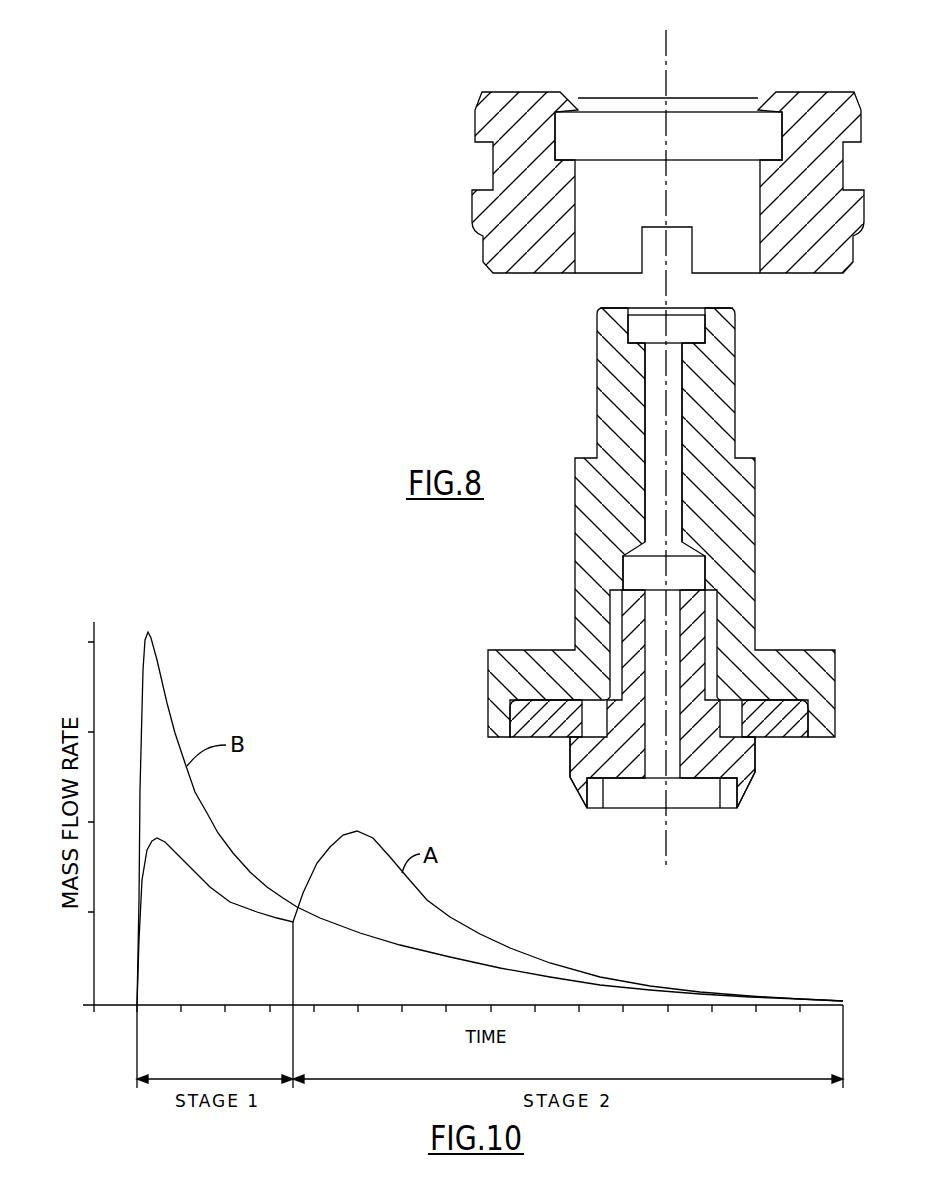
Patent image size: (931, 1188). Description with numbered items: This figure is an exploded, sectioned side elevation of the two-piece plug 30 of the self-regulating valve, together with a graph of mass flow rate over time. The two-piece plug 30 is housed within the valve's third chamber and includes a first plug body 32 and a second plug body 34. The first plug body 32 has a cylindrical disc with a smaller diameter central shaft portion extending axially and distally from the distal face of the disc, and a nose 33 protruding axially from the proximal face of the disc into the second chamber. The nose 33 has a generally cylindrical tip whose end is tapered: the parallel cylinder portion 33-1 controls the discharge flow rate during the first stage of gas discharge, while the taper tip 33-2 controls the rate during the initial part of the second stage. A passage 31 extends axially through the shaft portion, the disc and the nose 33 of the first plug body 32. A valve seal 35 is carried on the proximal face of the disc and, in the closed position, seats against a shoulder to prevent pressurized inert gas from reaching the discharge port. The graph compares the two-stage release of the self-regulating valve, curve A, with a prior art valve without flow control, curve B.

The two-piece plug 30 is at (506, 373).
The passage 31 is at (670, 412).
The first plug body 32 is at (569, 553).
The nose 33 is at (675, 704).
The cylinder portion 33-1 is at (756, 758).
The taper tip 33-2 is at (752, 798).
The second plug body 34 is at (472, 214).
The valve seal 35 is at (532, 738).